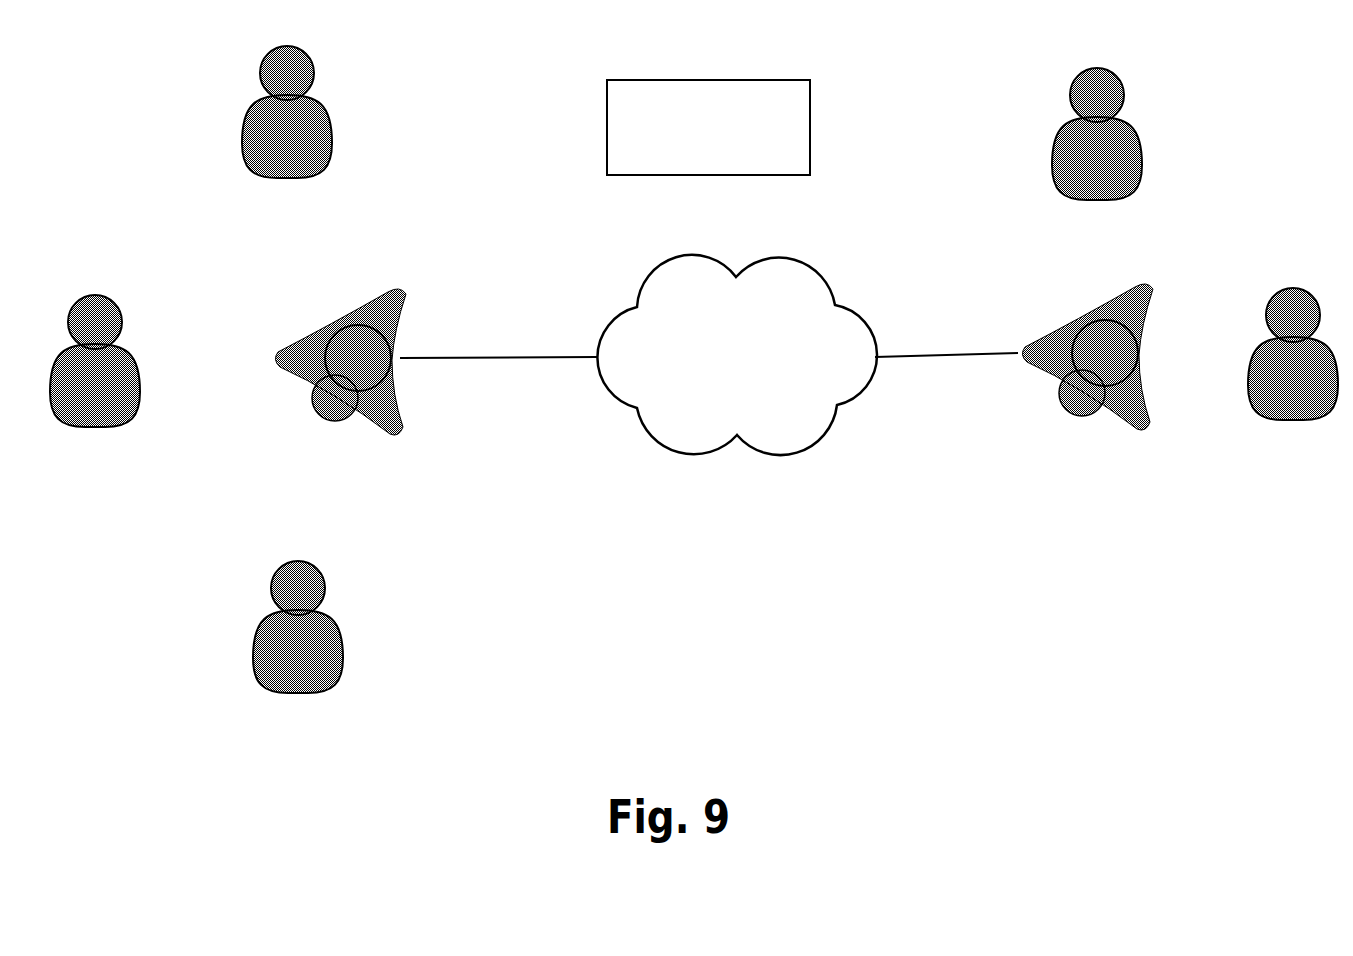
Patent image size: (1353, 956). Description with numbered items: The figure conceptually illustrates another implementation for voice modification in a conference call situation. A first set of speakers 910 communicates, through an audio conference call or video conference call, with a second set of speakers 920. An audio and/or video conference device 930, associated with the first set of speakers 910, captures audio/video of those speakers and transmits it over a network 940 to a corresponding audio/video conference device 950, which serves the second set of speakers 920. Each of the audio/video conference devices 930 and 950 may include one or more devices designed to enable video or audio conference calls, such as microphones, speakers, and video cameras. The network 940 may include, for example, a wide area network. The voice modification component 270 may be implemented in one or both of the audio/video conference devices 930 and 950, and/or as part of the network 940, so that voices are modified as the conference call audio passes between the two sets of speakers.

The voice modification component 270 is at (687, 80).
The first set of speakers 910 is at (240, 147).
The second set of speakers 920 is at (1065, 188).
The audio/video conference device 930 is at (403, 415).
The network 940 is at (818, 440).
The audio/video conference device 950 is at (1145, 388).